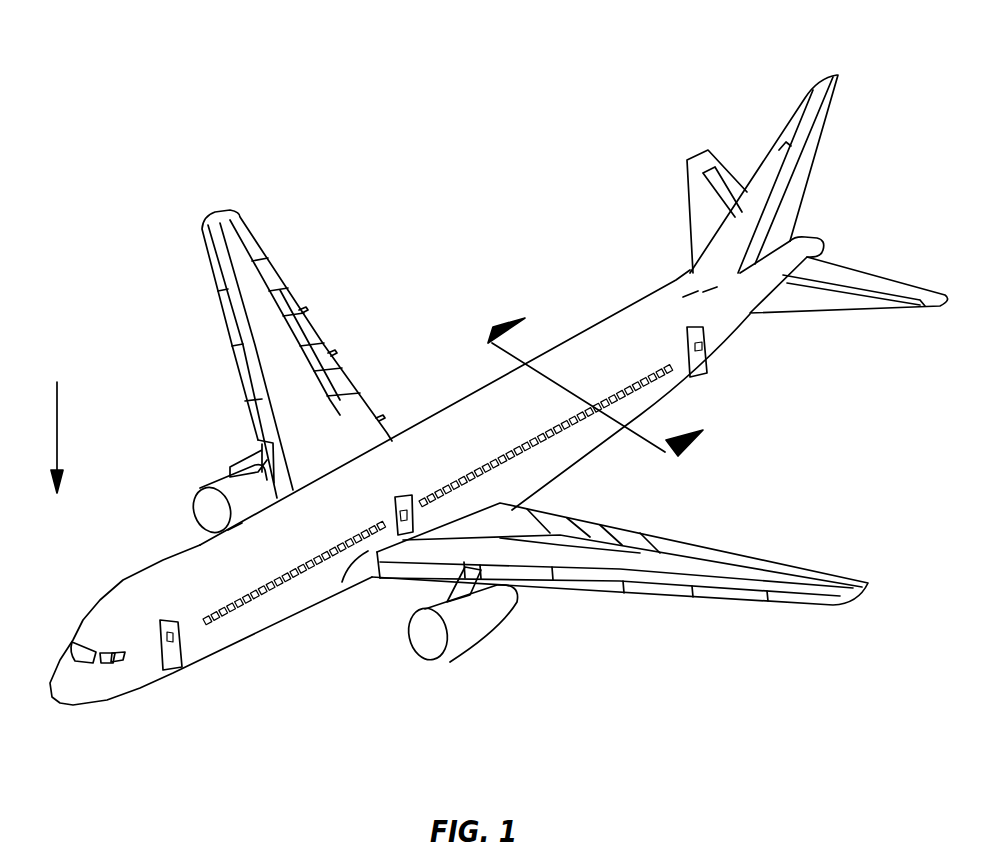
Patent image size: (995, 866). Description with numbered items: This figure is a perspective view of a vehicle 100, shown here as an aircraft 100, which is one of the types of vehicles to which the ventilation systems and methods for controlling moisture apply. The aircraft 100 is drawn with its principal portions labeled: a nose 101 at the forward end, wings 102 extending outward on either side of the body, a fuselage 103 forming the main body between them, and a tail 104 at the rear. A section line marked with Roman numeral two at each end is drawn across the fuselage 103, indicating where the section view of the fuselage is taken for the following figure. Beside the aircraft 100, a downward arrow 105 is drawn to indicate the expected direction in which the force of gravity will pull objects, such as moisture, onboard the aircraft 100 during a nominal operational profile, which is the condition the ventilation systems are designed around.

The aircraft 100 is at (497, 393).
The nose 101 is at (73, 703).
The wings 102 is at (237, 203).
The fuselage 103 is at (574, 444).
The tail 104 is at (843, 80).
The downward arrow 105 is at (59, 433).